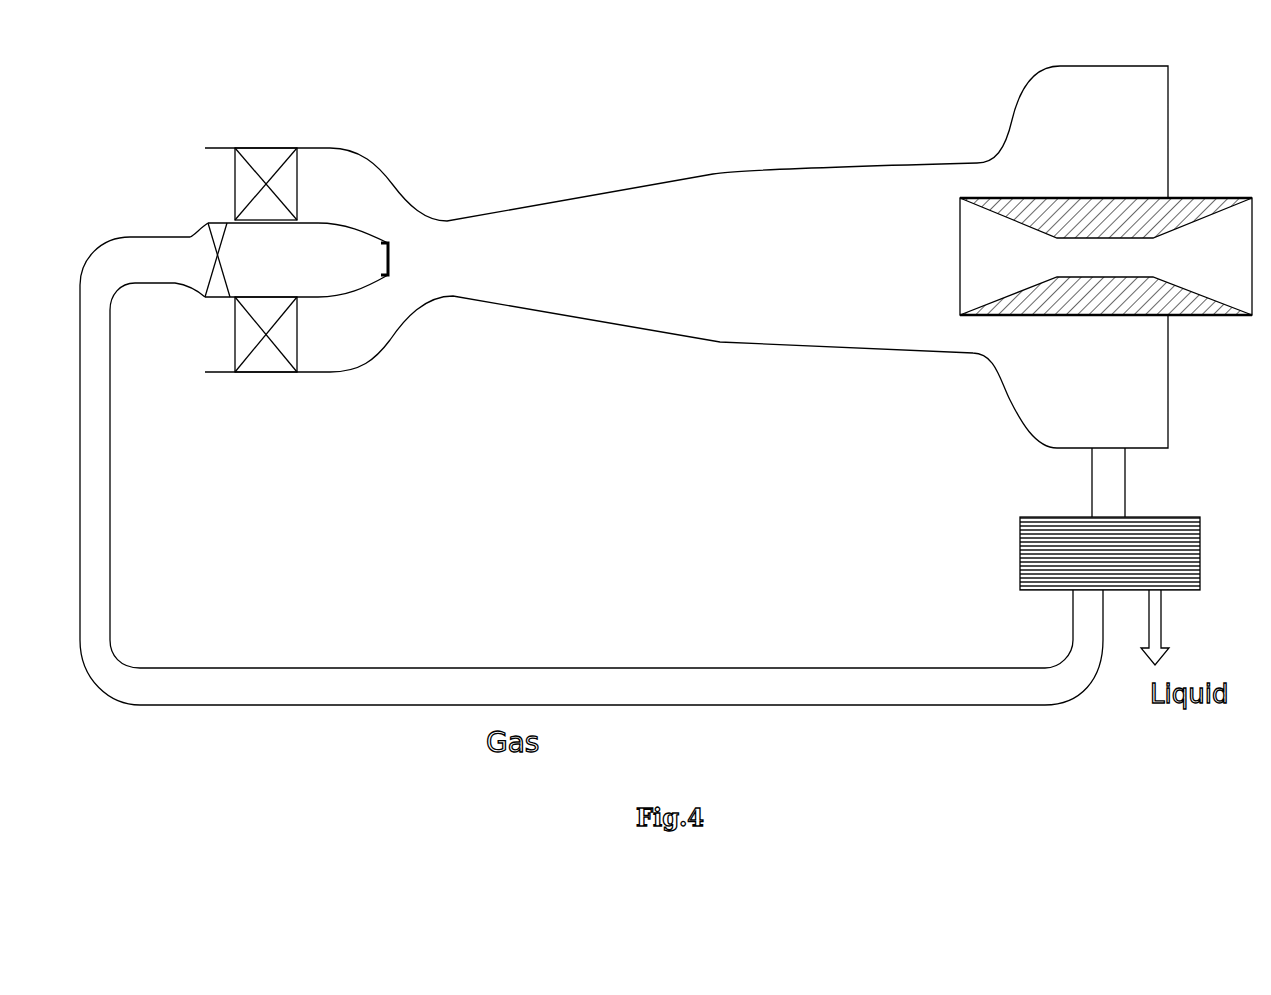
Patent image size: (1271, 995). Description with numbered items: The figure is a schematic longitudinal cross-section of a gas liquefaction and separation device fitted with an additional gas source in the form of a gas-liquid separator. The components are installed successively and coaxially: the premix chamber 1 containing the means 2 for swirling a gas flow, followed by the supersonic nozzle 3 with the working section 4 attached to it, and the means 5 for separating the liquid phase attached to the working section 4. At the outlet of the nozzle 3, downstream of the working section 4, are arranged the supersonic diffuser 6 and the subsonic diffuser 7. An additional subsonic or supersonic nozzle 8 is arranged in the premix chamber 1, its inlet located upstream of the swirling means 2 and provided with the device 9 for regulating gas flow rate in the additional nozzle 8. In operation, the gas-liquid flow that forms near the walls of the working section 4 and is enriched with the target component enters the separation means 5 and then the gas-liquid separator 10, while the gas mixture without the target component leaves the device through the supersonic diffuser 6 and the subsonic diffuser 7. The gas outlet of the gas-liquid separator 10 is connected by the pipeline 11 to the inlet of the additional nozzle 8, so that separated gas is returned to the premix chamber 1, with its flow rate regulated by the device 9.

The premix chamber 1 is at (218, 180).
The means for swirling a gas flow 2 is at (277, 192).
The supersonic nozzle 3 is at (605, 230).
The working section 4 is at (803, 208).
The means for separating the liquid phase 5 is at (1060, 125).
The supersonic diffuser 6 is at (988, 268).
The subsonic diffuser 7 is at (1222, 252).
The additional subsonic or supersonic nozzle 8 is at (338, 253).
The device for regulating gas flow rate 9 is at (217, 257).
The gas-liquid separator 10 is at (1088, 549).
The pipeline 11 is at (462, 667).